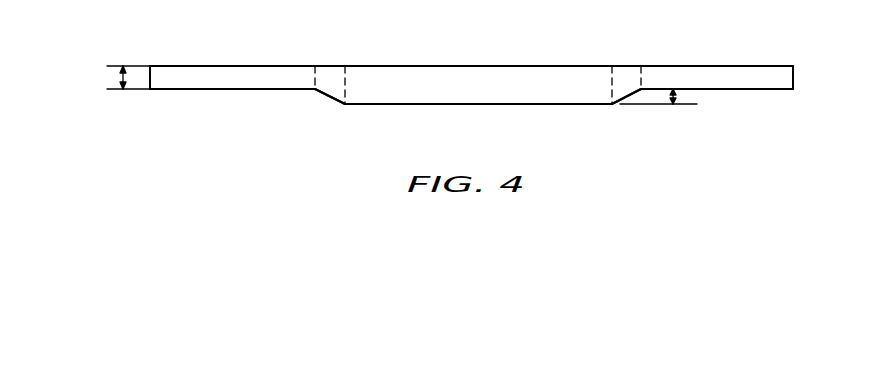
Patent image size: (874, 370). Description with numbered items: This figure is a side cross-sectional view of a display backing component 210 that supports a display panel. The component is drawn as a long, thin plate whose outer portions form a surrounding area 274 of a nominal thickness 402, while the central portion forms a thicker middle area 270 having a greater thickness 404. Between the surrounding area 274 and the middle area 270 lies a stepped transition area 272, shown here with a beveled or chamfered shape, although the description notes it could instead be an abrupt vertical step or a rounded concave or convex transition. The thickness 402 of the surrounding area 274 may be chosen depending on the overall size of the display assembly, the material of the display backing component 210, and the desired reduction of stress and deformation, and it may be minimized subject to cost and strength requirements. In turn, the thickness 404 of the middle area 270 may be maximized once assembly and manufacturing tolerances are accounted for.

The display backing component 210 is at (800, 77).
The middle area 270 is at (393, 98).
The stepped transition area 272 is at (332, 91).
The surrounding area 274 is at (235, 77).
The nominal thickness 402 is at (122, 77).
The thickness 404 is at (678, 97).